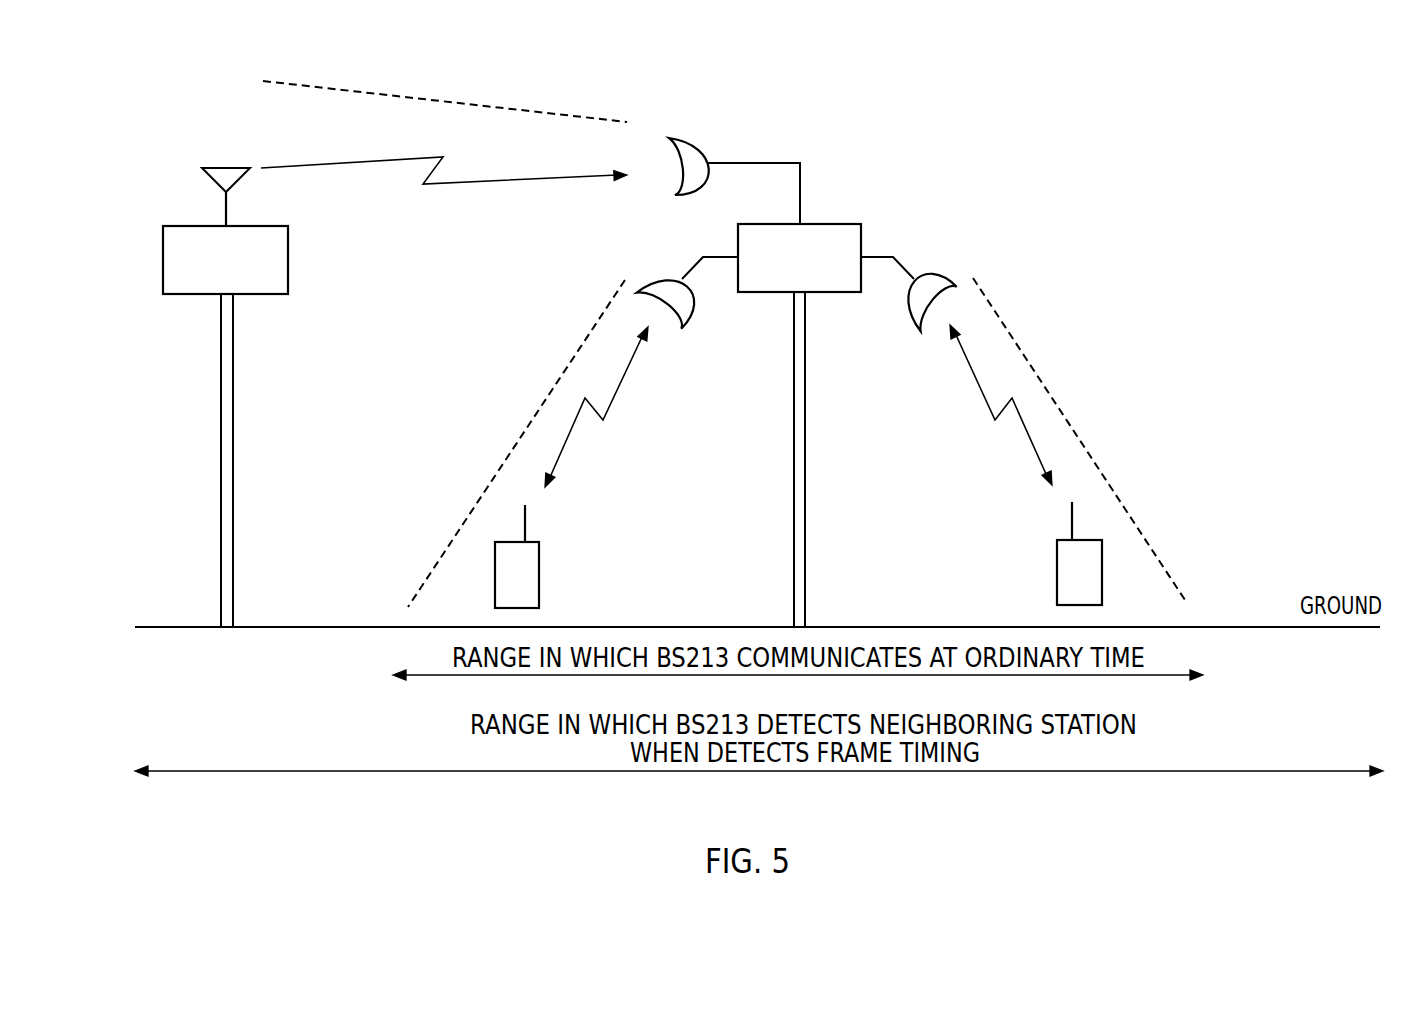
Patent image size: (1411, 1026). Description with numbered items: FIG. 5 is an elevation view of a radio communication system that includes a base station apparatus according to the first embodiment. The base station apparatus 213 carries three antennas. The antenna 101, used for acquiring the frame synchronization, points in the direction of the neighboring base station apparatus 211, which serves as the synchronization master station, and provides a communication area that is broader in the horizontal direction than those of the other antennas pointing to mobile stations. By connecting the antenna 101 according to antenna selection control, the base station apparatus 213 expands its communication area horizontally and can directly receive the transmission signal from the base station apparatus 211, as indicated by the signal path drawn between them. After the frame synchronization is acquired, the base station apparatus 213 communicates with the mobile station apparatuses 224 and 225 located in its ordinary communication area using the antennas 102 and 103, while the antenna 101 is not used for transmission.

The antenna 101 is at (700, 141).
The antenna 102 is at (685, 323).
The antenna 103 is at (908, 323).
The base station apparatus 211 is at (292, 211).
The base station apparatus 213 is at (827, 222).
The mobile station apparatus 224 is at (572, 567).
The mobile station apparatus 225 is at (1057, 577).